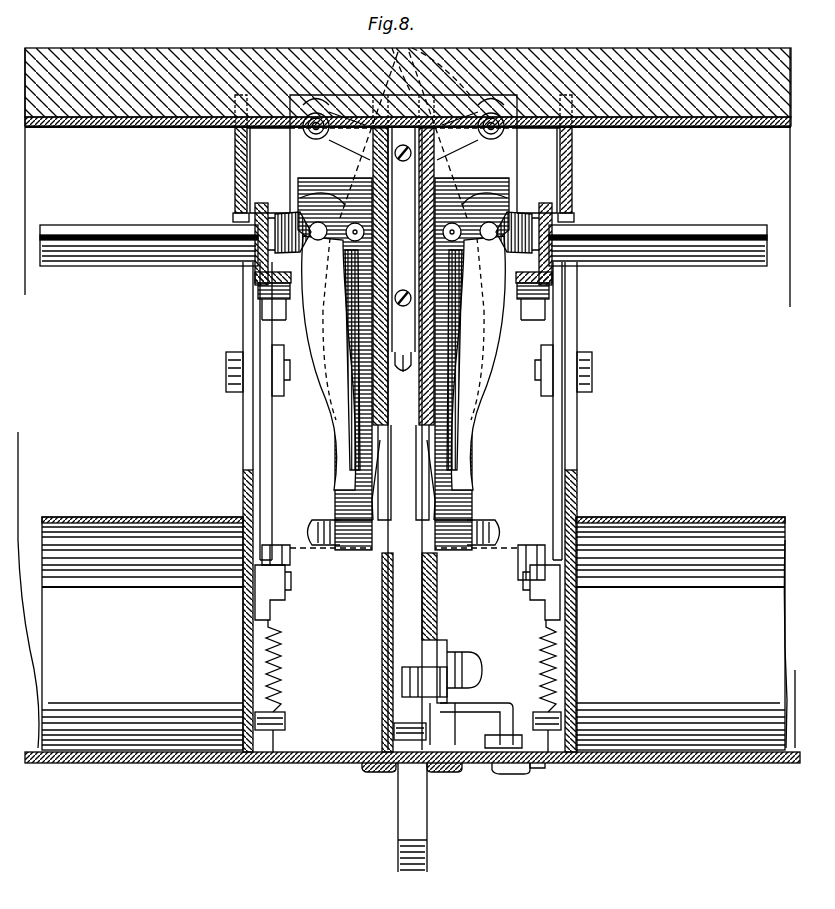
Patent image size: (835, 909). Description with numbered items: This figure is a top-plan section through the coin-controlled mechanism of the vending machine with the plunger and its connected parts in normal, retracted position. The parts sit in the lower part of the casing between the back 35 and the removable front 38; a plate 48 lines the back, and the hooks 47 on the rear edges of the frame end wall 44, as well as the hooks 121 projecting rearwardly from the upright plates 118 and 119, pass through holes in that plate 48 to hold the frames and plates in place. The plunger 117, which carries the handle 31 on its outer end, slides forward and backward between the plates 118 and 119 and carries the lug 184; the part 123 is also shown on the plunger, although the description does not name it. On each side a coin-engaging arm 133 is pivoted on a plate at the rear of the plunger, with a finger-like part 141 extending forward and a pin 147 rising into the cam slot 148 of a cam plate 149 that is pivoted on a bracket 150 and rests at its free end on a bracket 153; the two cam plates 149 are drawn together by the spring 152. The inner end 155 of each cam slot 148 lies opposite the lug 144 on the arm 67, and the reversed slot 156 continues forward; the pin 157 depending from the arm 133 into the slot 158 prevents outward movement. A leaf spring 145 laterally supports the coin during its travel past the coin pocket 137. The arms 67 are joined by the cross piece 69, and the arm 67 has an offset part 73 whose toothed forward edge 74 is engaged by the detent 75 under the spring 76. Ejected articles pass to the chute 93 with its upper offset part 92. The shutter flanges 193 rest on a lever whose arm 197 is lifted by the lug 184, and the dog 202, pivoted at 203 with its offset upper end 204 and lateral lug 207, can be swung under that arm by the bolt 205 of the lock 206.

The handle 31 is at (398, 808).
The back 35 is at (738, 25).
The removable front 38 is at (287, 763).
The end wall 44 is at (243, 665).
The hook 47 is at (218, 132).
The plate 48 is at (755, 127).
The arm 67 is at (262, 383).
The cross piece 69 is at (165, 212).
The offset part 73 is at (262, 512).
The forward edge 74 is at (286, 565).
The detent 75 is at (258, 590).
The spring 76 is at (282, 664).
The upper offset part 92 is at (160, 540).
The chute 93 is at (413, 633).
The plunger 117 is at (408, 492).
The upright plate 118 is at (382, 624).
The upright plate 119 is at (437, 614).
The hook 121 is at (445, 45).
The collar 123 is at (394, 731).
The coin-engaging arm 133 is at (296, 305).
The coin pocket 137 is at (352, 400).
The finger-like part 141 is at (328, 380).
The lug 144 is at (300, 290).
The leaf spring 145 is at (378, 498).
The pin 147 is at (262, 238).
The cam slot 148 is at (280, 262).
The cam plate 149 is at (305, 170).
The bracket 150 is at (305, 141).
The spring 152 is at (405, 212).
The bracket 153 is at (328, 545).
The inner end 155 is at (300, 300).
The cam slot 156 is at (320, 350).
The pin 157 is at (300, 198).
The slot 158 is at (300, 182).
The lug 184 is at (405, 372).
The flange 193 is at (263, 250).
The arm 197 is at (560, 198).
The dog 202 is at (447, 652).
The pivot 203 is at (482, 665).
The off-set upper end 204 is at (402, 684).
The bolt 205 is at (518, 763).
The lock 206 is at (540, 763).
The lug 207 is at (508, 712).